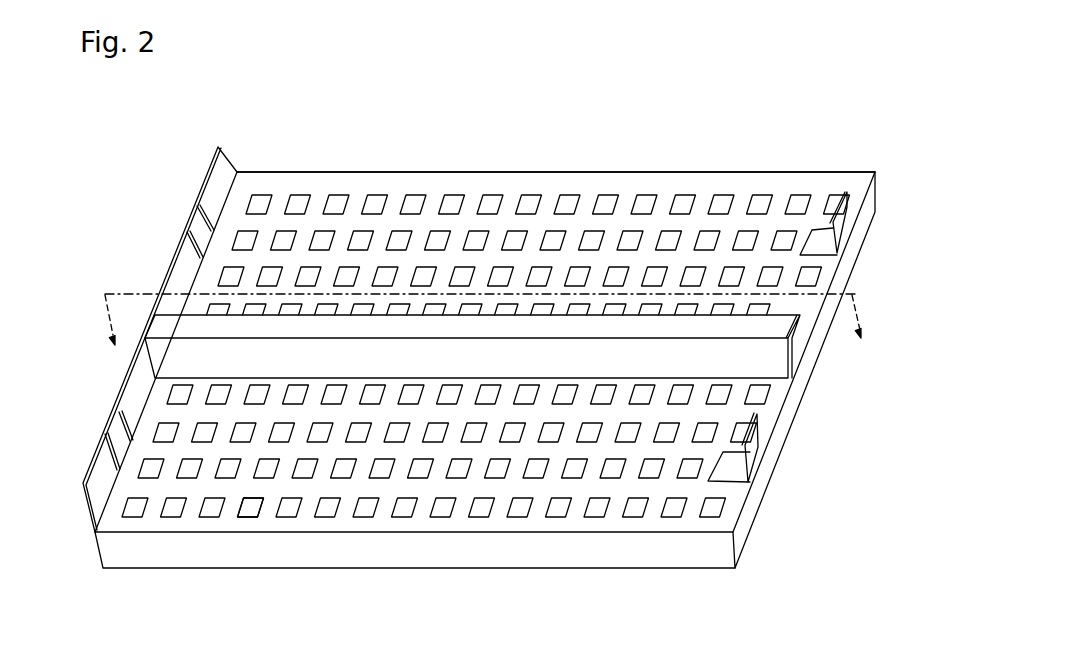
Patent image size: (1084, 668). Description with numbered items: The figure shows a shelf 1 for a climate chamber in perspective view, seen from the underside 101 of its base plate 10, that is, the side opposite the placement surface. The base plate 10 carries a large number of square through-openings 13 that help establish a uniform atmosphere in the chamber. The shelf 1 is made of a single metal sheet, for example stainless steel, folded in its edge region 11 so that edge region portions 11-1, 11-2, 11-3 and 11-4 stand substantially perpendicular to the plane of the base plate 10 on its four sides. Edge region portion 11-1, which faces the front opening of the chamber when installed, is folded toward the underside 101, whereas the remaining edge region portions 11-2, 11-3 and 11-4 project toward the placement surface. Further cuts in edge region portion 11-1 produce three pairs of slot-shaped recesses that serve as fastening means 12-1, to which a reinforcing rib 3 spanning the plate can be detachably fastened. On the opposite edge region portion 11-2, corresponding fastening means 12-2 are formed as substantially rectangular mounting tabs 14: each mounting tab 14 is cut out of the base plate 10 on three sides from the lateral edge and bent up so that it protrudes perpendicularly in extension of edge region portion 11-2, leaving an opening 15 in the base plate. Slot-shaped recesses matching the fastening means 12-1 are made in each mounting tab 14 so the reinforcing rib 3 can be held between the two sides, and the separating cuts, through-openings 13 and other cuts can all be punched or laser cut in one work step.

The shelf 1 is at (806, 83).
The base plate 10 is at (615, 185).
The underside 101 is at (322, 188).
The edge region 11 is at (752, 595).
The edge region portion 11-1 is at (195, 158).
The edge region portion 11-2 is at (890, 178).
The edge region portion 11-3 is at (392, 575).
The edge region portion 11-4 is at (429, 158).
The fastening means 12-1 is at (112, 432).
The fastening means 12-2 is at (790, 437).
The through-openings 13 is at (247, 507).
The mounting tab 14 is at (750, 452).
The opening 15 is at (733, 463).
The reinforcing rib 3 is at (797, 320).